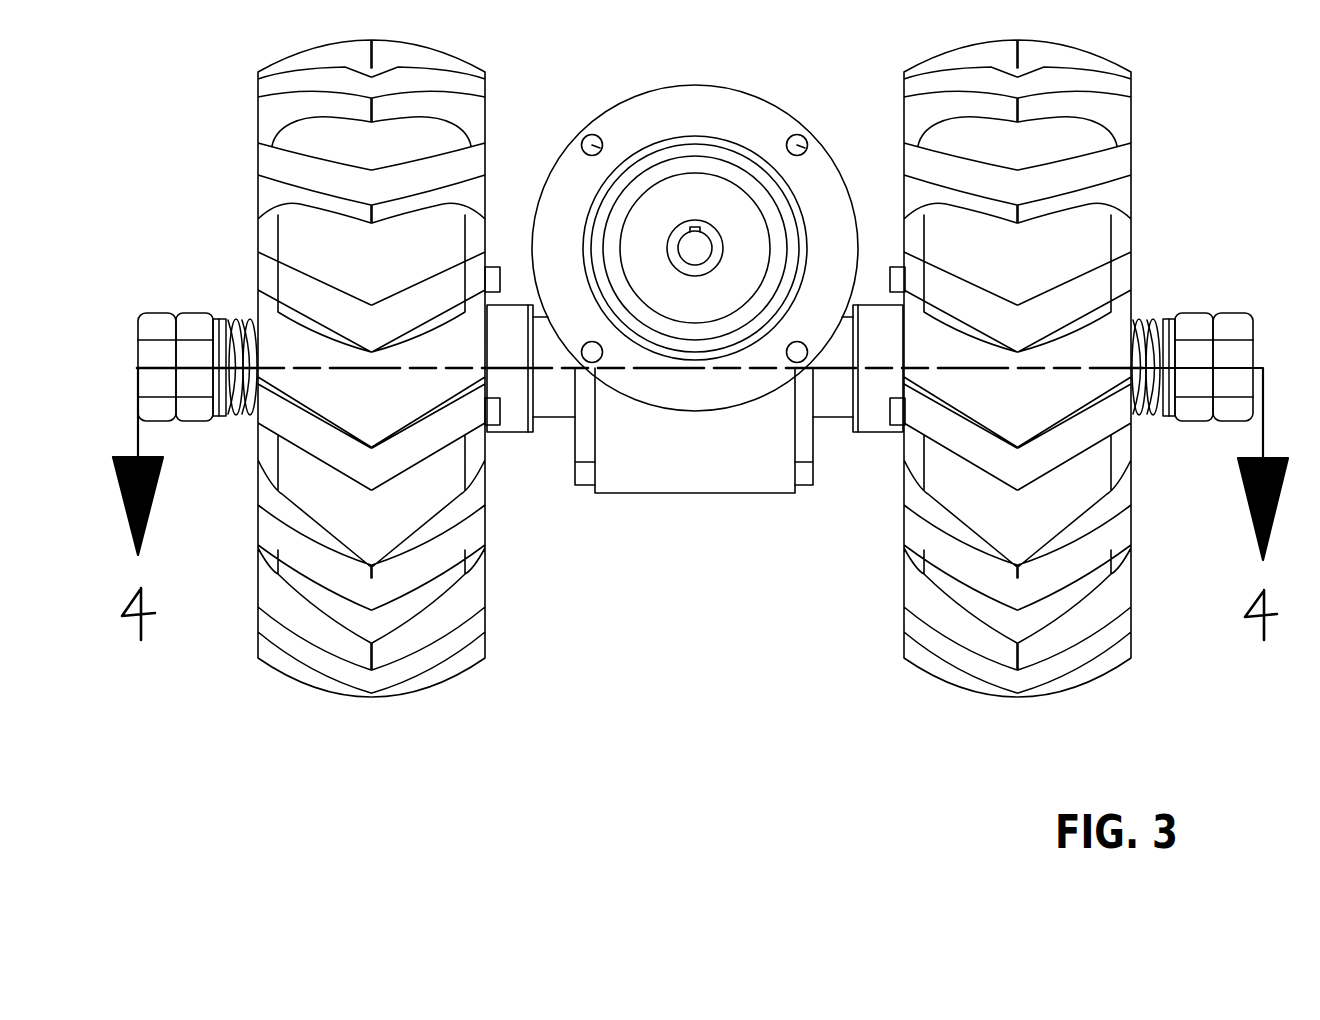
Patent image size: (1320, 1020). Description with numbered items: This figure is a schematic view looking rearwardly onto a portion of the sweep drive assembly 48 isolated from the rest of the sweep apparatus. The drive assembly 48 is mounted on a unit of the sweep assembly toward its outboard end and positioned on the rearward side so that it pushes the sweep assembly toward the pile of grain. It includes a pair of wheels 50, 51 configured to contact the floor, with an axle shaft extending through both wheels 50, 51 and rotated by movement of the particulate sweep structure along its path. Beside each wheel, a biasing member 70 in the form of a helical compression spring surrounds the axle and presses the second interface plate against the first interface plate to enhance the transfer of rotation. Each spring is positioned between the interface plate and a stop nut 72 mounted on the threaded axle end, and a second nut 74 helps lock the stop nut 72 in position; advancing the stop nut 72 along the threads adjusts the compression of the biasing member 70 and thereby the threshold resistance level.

The sweep drive assembly 48 is at (731, 768).
The wheel 50 is at (1078, 250).
The wheel 51 is at (305, 224).
The biasing member 70 is at (247, 418).
The stop nut 72 is at (190, 327).
The second nut 74 is at (162, 323).